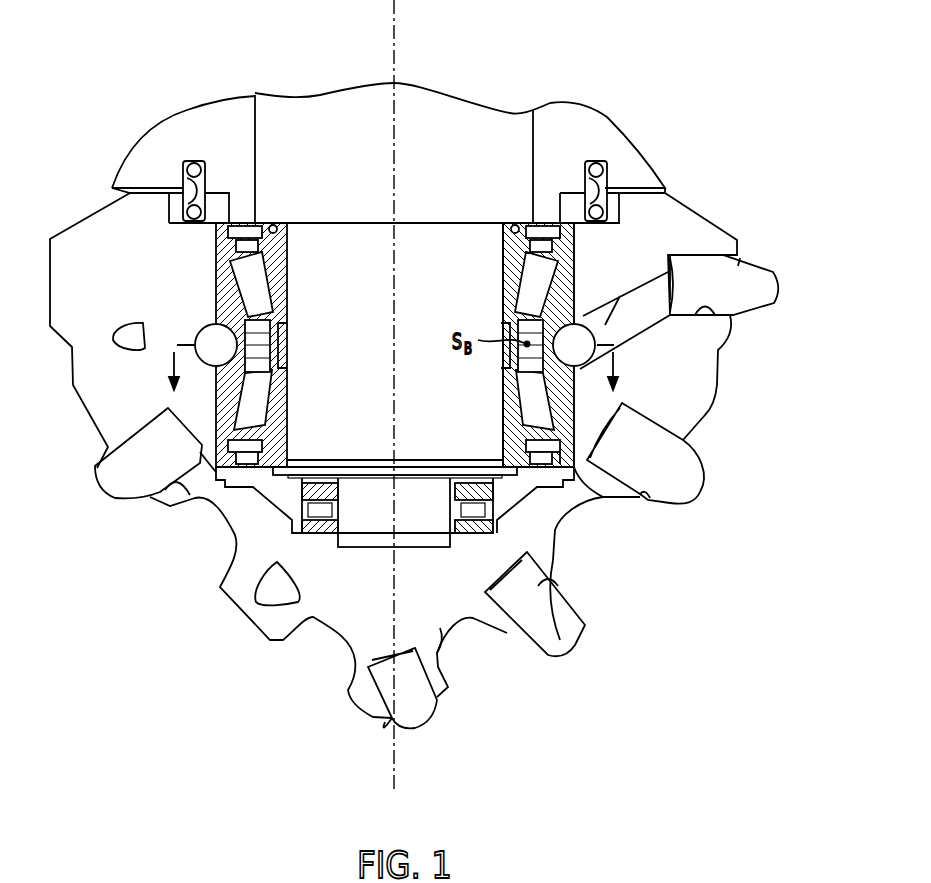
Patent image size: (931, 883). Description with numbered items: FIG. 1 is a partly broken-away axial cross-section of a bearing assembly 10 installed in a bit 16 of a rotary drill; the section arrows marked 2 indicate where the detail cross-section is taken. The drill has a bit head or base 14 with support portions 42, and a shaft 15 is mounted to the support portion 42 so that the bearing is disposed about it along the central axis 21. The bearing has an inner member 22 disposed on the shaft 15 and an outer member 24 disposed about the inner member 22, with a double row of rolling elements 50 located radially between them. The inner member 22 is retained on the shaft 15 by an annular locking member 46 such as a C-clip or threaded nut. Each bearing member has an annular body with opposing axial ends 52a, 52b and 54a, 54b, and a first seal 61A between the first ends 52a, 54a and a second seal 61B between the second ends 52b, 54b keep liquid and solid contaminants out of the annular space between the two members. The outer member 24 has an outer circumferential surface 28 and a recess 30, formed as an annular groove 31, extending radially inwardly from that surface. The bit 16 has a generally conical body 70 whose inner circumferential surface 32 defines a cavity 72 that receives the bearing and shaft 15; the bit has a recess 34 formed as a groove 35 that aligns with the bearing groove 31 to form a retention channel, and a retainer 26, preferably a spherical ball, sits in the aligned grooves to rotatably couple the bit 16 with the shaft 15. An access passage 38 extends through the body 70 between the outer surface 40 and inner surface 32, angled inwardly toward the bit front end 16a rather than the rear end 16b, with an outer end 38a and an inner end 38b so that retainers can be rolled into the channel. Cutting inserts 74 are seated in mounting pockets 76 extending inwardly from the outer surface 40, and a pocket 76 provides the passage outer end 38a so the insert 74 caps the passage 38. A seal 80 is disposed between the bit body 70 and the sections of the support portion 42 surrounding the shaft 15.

The bearing assembly 10 is at (148, 249).
The bit head or base 14 is at (216, 114).
The shaft 15 is at (497, 487).
The central axis 21 is at (395, 33).
The bit 16 is at (233, 629).
The bit front end 16a is at (442, 697).
The bit rear end 16b is at (645, 181).
The inner member 22 is at (499, 286).
The outer member 24 is at (208, 298).
The retainer 26 is at (192, 336).
The outer circumferential surface 28 is at (576, 262).
The recess 30 is at (580, 352).
The groove 31 is at (249, 345).
The inner circumferential surface 32 is at (240, 433).
The bit recess 34 is at (578, 364).
The groove 35 is at (212, 366).
The access passage 38 is at (640, 330).
The passage outer end 38a is at (740, 258).
The passage inner end 38b is at (620, 296).
The bit outer surface 40 is at (722, 378).
The support portion 42 is at (607, 118).
The annular locking member 46 is at (285, 478).
The rolling elements 50 is at (263, 293).
The first axial end of inner member body 52a is at (553, 471).
The second axial end of inner member body 52b is at (512, 224).
The first axial end of outer member body 54a is at (600, 497).
The second axial end of outer member body 54b is at (560, 222).
The first seal 61A is at (541, 470).
The second seal 61B is at (538, 228).
The conical body 70 is at (448, 630).
The cavity 72 is at (258, 260).
The cutting insert 74 is at (757, 290).
The mounting pocket 76 is at (735, 318).
The seal 80 is at (182, 184).
The section line 2 is at (392, 369).